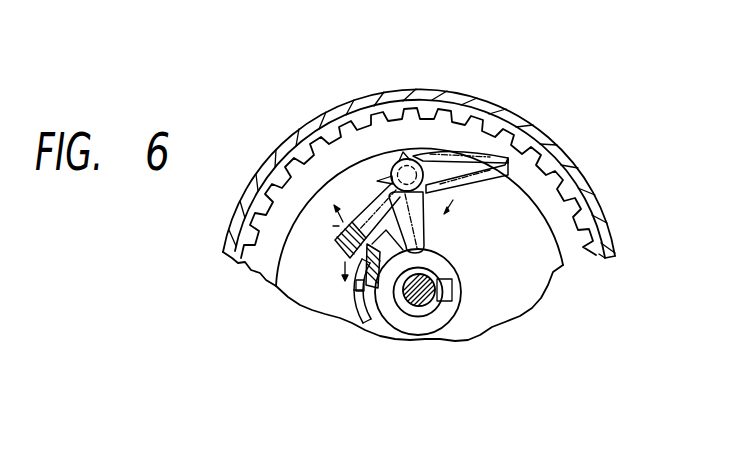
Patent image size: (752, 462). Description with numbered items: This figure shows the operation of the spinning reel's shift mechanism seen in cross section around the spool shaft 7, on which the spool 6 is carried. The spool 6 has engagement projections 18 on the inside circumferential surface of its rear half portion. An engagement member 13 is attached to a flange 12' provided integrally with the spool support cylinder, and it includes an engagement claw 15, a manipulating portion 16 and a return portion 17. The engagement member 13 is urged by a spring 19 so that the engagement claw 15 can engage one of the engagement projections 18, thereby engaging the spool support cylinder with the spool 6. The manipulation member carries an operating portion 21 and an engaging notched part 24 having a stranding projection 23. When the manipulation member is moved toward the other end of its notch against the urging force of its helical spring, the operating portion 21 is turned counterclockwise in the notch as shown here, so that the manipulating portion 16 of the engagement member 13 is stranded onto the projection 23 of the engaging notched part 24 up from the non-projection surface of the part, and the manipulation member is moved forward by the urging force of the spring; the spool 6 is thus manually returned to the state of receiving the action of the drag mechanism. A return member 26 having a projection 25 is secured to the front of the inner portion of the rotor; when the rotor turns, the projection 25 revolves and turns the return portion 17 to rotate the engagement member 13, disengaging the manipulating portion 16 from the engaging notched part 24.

The spool 6 is at (567, 145).
The engagement projections 18 is at (583, 168).
The flange 12' is at (445, 244).
The engagement member 13 is at (392, 166).
The spring 19 is at (416, 158).
The engagement claw 15 is at (510, 152).
The return portion 17 is at (425, 232).
The manipulating portion 16 is at (338, 240).
The projection 23 is at (366, 255).
The operating portion 21 is at (367, 290).
The engaging notched part 24 is at (362, 284).
The projection 25 is at (447, 275).
The spool shaft 7 is at (419, 302).
The return member 26 is at (443, 303).